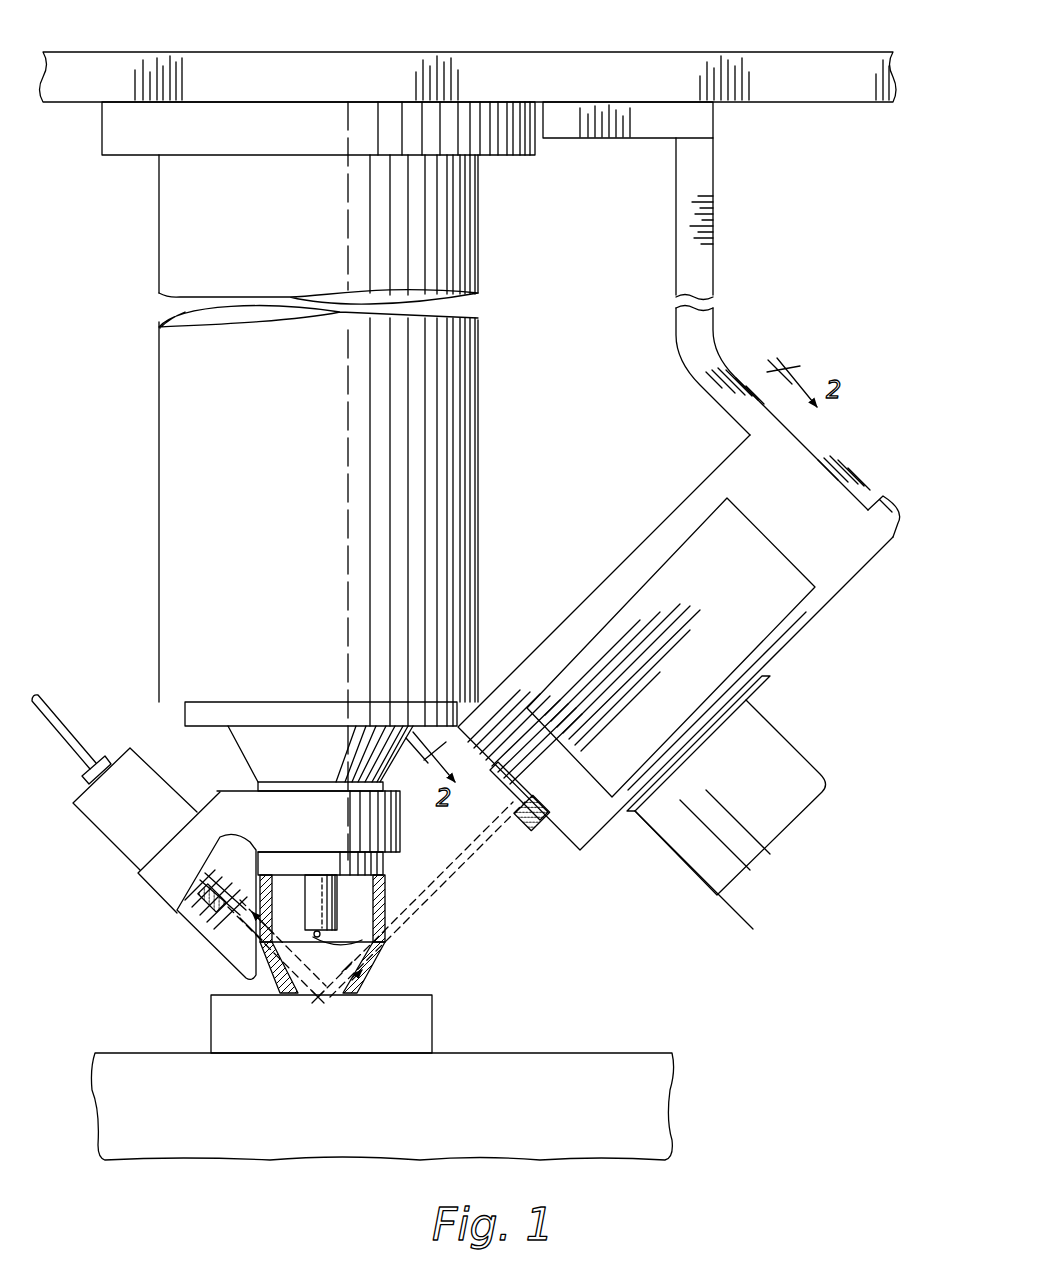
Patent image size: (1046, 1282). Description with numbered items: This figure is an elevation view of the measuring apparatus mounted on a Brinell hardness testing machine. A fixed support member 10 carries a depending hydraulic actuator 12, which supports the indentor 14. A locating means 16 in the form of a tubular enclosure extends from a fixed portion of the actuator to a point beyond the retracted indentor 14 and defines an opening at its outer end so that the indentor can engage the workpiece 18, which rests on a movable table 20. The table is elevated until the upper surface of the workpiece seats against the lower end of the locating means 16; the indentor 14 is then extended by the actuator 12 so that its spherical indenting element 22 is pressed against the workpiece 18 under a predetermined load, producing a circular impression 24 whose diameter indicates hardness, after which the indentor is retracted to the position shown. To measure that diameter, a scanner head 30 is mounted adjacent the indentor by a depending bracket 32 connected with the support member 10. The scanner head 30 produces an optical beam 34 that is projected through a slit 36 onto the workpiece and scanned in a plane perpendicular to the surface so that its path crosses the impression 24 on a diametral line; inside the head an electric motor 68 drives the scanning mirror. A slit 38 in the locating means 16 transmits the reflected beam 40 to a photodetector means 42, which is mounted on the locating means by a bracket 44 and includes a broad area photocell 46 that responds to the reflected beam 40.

The fixed support member 10 is at (615, 70).
The hydraulic actuator 12 is at (470, 395).
The indentor 14 is at (335, 900).
The locating means 16 is at (383, 865).
The workpiece 18 is at (432, 1023).
The movable table 20 is at (570, 1053).
The spherical indenting element 22 is at (385, 946).
The impression 24 is at (318, 997).
The scanner head 30 is at (597, 582).
The depending bracket 32 is at (690, 183).
The optical beam 34 is at (490, 823).
The slit 36 is at (377, 958).
The slit 38 is at (277, 972).
The reflected beam 40 is at (281, 908).
The photodetector means 42 is at (177, 912).
The bracket 44 is at (218, 789).
The photocell 46 is at (197, 943).
The electric motor 68 is at (795, 768).